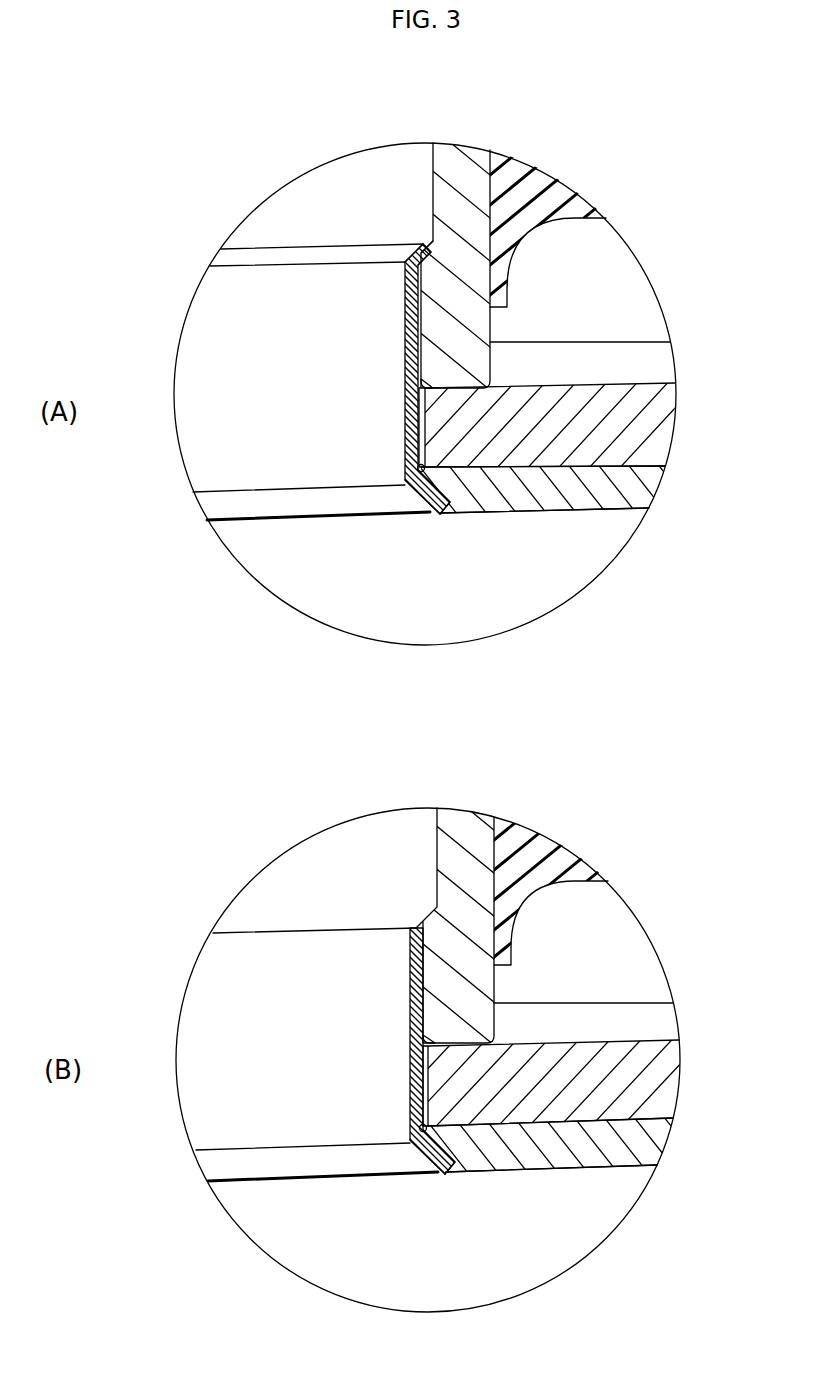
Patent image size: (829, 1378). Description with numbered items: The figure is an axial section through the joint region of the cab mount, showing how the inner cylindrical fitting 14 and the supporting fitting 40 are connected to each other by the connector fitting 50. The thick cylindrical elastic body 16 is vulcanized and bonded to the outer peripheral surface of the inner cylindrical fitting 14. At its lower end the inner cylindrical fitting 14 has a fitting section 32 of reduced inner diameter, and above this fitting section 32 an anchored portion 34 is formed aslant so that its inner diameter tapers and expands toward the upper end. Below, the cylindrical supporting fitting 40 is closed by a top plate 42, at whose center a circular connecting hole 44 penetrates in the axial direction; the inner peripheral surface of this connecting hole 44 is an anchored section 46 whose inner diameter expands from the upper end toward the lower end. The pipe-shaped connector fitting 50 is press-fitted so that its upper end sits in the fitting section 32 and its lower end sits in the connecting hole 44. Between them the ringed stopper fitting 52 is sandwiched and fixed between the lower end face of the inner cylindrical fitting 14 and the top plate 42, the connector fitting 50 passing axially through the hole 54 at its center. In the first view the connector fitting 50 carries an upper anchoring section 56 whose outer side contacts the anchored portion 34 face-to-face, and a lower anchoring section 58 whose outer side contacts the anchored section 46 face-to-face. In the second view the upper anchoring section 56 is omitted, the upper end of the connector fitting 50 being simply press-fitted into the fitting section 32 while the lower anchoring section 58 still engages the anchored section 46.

In FIG. 3A, the inner cylindrical fitting 14 is at (477, 131).
In FIG. 3B, the inner cylindrical fitting 14 is at (478, 799).
In FIG. 3A, the elastic body 16 is at (525, 225).
In FIG. 3B, the elastic body 16 is at (530, 890).
In FIG. 3A, the fitting section 32 is at (406, 313).
In FIG. 3B, the fitting section 32 is at (410, 972).
In FIG. 3A, the anchored portion 34 is at (428, 245).
In FIG. 3A, the supporting fitting 40 is at (664, 501).
In FIG. 3B, the supporting fitting 40 is at (665, 1162).
In FIG. 3A, the top plate 42 is at (543, 508).
In FIG. 3B, the top plate 42 is at (546, 1170).
In FIG. 3A, the connecting hole 44 is at (418, 468).
In FIG. 3B, the connecting hole 44 is at (420, 1128).
In FIG. 3A, the anchored section 46 is at (427, 495).
In FIG. 3B, the anchored section 46 is at (433, 1157).
In FIG. 3A, the connector fitting 50 is at (267, 235).
In FIG. 3B, the connector fitting 50 is at (263, 920).
In FIG. 3A, the stopper fitting 52 is at (665, 424).
In FIG. 3B, the stopper fitting 52 is at (675, 1083).
In FIG. 3A, the hole 54 is at (420, 426).
In FIG. 3B, the hole 54 is at (423, 1086).
In FIG. 3A, the upper anchoring section 56 is at (410, 246).
In FIG. 3A, the lower anchoring section 58 is at (405, 488).
In FIG. 3B, the lower anchoring section 58 is at (410, 1147).